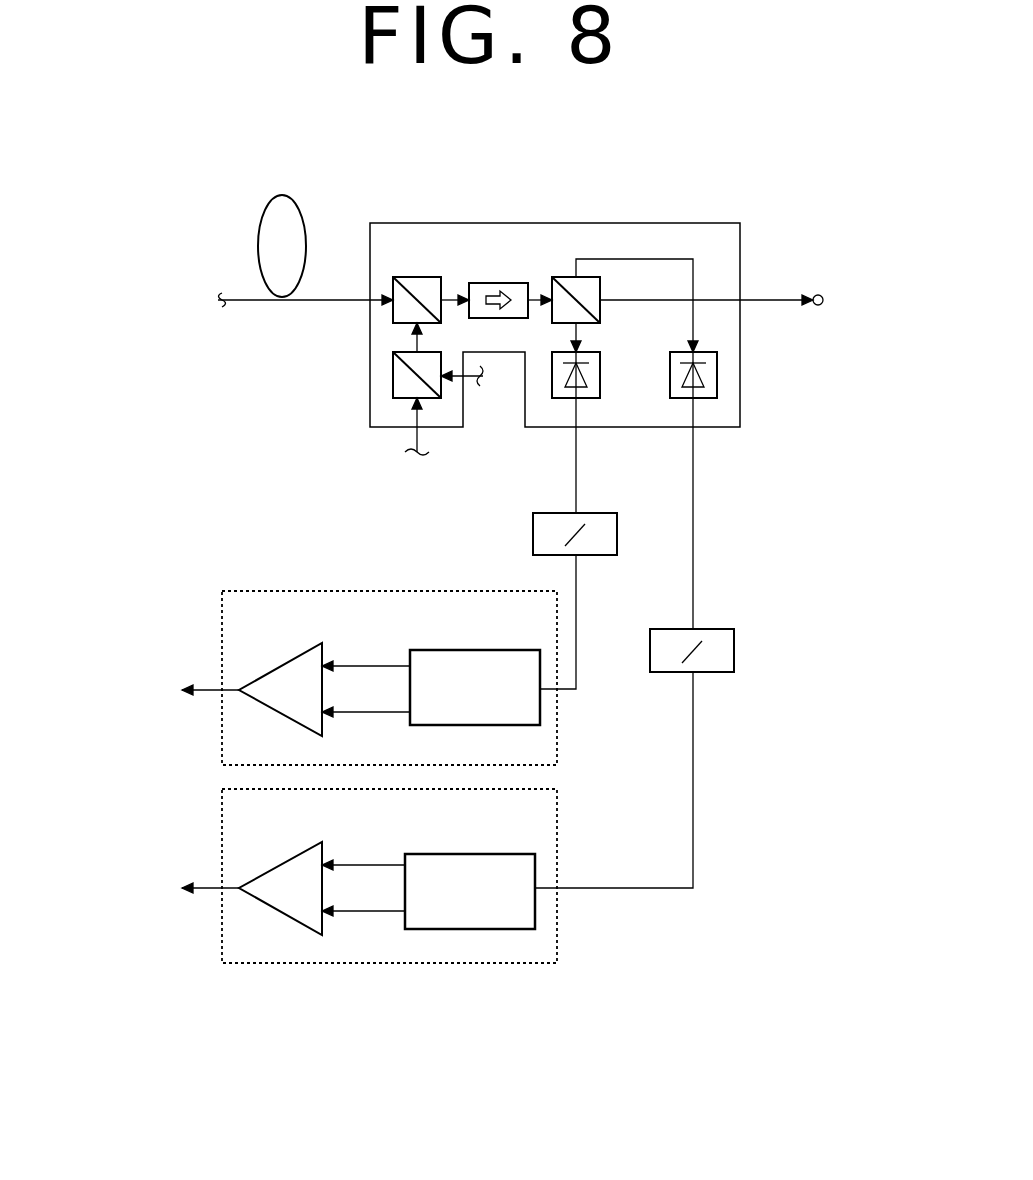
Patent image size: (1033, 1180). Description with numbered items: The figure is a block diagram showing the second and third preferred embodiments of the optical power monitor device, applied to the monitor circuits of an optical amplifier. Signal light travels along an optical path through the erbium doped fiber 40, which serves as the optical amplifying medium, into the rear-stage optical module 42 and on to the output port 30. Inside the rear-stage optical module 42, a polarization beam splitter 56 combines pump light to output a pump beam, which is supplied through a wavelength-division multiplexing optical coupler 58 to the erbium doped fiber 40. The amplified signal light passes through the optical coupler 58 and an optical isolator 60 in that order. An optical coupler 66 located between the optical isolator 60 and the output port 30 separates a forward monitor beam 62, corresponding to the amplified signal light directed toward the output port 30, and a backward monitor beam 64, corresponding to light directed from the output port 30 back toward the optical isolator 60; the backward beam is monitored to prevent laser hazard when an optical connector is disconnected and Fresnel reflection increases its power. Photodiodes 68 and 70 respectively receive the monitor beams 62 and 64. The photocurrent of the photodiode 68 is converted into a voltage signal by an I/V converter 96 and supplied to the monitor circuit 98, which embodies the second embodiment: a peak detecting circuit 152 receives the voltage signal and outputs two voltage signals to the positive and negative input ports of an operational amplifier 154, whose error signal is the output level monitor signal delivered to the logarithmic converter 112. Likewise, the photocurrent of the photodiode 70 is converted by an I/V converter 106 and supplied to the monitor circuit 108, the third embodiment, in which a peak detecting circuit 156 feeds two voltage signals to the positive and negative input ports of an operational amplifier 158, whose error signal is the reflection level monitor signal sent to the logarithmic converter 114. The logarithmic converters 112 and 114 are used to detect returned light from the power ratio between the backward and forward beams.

The output port 30 is at (819, 295).
The erbium doped fiber 40 is at (286, 195).
The rear-stage optical module 42 is at (512, 223).
The polarization beam splitter 56 is at (393, 383).
The optical coupler 58 is at (421, 277).
The optical isolator 60 is at (505, 283).
The monitor beam 62 is at (576, 332).
The monitor beam 64 is at (645, 259).
The optical coupler 66 is at (562, 277).
The photodiode 68 is at (600, 385).
The photodiode 70 is at (717, 375).
The I/V converter 96 is at (533, 534).
The monitor circuit 98 is at (363, 590).
The I/V converter 106 is at (734, 652).
The monitor circuit 108 is at (390, 965).
The logarithmic converter 112 is at (161, 690).
The logarithmic converter 114 is at (161, 885).
The peak detecting circuit 152 is at (476, 650).
The operational amplifier 154 is at (288, 657).
The peak detecting circuit 156 is at (470, 854).
The operational amplifier 158 is at (288, 855).